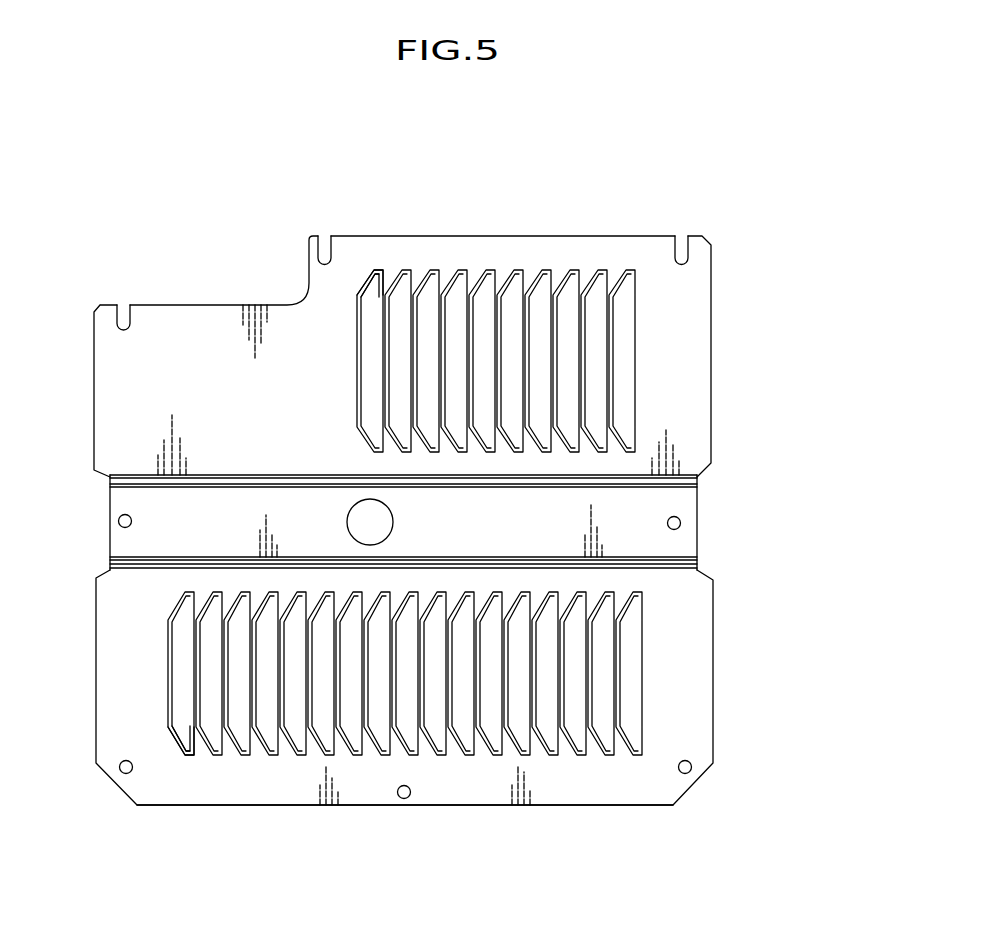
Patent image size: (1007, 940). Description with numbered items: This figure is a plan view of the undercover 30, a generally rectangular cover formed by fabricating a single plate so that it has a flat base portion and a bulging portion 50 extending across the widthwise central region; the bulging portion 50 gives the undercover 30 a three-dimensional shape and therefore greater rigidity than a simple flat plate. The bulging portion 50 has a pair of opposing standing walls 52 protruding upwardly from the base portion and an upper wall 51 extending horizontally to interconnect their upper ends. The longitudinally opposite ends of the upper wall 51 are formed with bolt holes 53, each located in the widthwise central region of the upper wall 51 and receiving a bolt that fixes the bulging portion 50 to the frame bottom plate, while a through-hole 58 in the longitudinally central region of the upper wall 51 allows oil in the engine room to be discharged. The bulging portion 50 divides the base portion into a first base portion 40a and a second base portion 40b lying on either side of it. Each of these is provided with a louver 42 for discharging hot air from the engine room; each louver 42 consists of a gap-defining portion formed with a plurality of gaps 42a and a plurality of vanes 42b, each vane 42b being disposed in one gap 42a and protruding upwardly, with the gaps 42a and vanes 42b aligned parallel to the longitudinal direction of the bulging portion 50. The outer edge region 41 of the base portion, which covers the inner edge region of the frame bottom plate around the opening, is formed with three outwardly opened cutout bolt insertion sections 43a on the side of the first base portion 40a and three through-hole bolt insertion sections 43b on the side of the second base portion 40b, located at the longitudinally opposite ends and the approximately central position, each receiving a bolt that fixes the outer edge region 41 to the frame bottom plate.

The undercover 30 is at (720, 232).
The first base portion 40a is at (680, 295).
The second base portion 40b is at (690, 668).
The outer edge region 41 is at (575, 800).
The louver 42 is at (507, 263).
The gaps 42a is at (375, 290).
The vanes 42b is at (380, 283).
The bolt insertion sections 43a is at (123, 305).
The bolt insertion sections 43b is at (126, 774).
The bulging portion 50 is at (685, 500).
The upper wall 51 is at (118, 500).
The standing walls 52 is at (110, 480).
The bolt holes 53 is at (118, 521).
The through-hole 58 is at (390, 530).